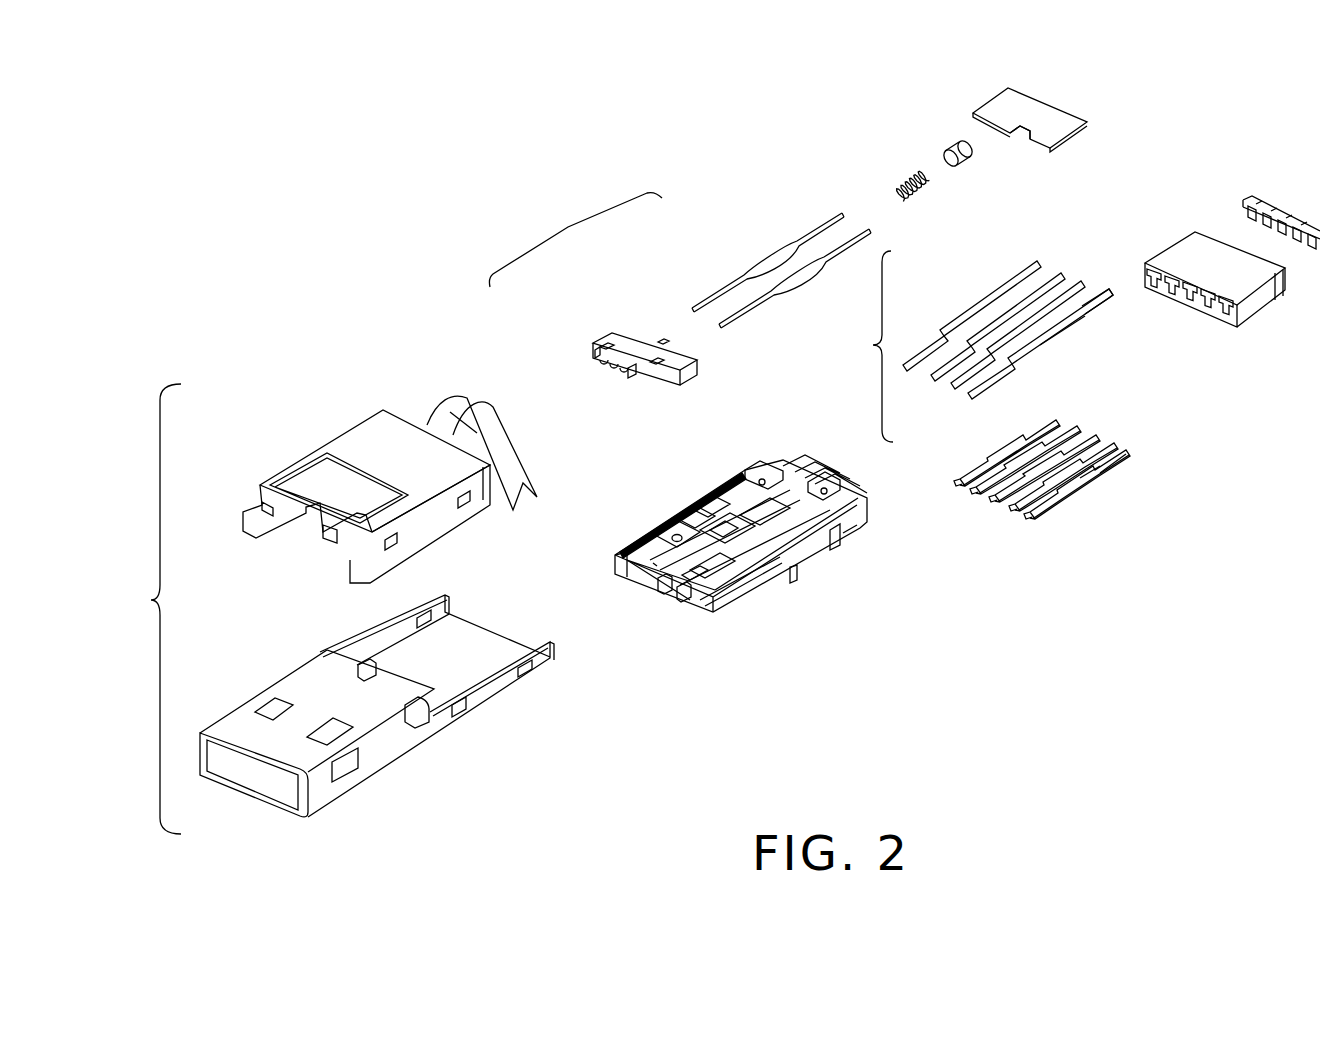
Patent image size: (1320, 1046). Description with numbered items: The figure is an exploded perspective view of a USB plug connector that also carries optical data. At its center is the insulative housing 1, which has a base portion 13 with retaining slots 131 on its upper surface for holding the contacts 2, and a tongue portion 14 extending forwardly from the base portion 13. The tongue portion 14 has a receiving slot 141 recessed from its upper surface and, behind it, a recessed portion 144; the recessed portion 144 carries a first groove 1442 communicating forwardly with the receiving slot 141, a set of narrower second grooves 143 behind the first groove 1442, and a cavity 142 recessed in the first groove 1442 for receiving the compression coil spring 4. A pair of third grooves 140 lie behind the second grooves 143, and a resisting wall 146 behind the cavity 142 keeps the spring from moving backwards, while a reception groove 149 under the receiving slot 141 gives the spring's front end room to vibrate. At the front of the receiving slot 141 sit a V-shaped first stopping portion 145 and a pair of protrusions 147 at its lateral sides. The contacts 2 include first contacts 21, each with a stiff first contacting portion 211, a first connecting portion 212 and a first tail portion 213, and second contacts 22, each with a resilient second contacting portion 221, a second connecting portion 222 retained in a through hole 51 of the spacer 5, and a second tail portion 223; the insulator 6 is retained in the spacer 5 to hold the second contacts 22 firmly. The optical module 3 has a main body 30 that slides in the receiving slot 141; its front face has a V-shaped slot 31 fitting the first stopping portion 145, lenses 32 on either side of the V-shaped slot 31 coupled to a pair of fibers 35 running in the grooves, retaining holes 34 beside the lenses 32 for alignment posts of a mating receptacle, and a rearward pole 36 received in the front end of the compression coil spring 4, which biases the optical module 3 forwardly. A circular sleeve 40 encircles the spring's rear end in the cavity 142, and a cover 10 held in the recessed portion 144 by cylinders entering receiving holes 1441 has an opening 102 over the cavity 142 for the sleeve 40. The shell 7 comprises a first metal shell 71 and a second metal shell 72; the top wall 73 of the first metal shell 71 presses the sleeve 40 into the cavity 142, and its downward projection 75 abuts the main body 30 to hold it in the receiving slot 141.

The insulative housing 1 is at (660, 480).
The base portion 13 is at (842, 542).
The retaining slots 131 is at (783, 470).
The tongue portion 14 is at (755, 583).
The third grooves 140 is at (797, 510).
The receiving slot 141 is at (630, 580).
The cavity 142 is at (700, 575).
The second grooves 143 is at (763, 560).
The recessed portion 144 is at (650, 528).
The receiving holes 1441 is at (663, 520).
The first groove 1442 is at (657, 545).
The first stopping portion 145 is at (665, 595).
The resisting wall 146 is at (715, 517).
The protrusions 147 is at (652, 582).
The reception groove 149 is at (690, 578).
The contacts 2 is at (870, 346).
The first contacts 21 is at (975, 290).
The first contacting portion 211 is at (995, 382).
The first connecting portion 212 is at (1053, 335).
The first tail portion 213 is at (1097, 308).
The second contacts 22 is at (982, 432).
The second contacting portion 221 is at (1037, 513).
The second connecting portion 222 is at (1092, 475).
The second tail portion 223 is at (1117, 457).
The optical module 3 is at (575, 239).
The main body 30 is at (585, 318).
The V-shaped slot 31 is at (633, 367).
The lenses 32 is at (613, 362).
The retaining holes 34 is at (595, 353).
The fibers 35 is at (730, 240).
The pole 36 is at (660, 343).
The compression coil spring 4 is at (885, 155).
The circular sleeve 40 is at (930, 120).
The spacer 5 is at (1152, 230).
The through hole 51 is at (1229, 312).
The insulator 6 is at (1222, 182).
The shell 7 is at (146, 609).
The first metal shell 71 is at (258, 652).
The second metal shell 72 is at (305, 418).
The top wall 73 is at (360, 705).
The projection 75 is at (260, 745).
The cover 10 is at (975, 80).
The opening 102 is at (1018, 130).